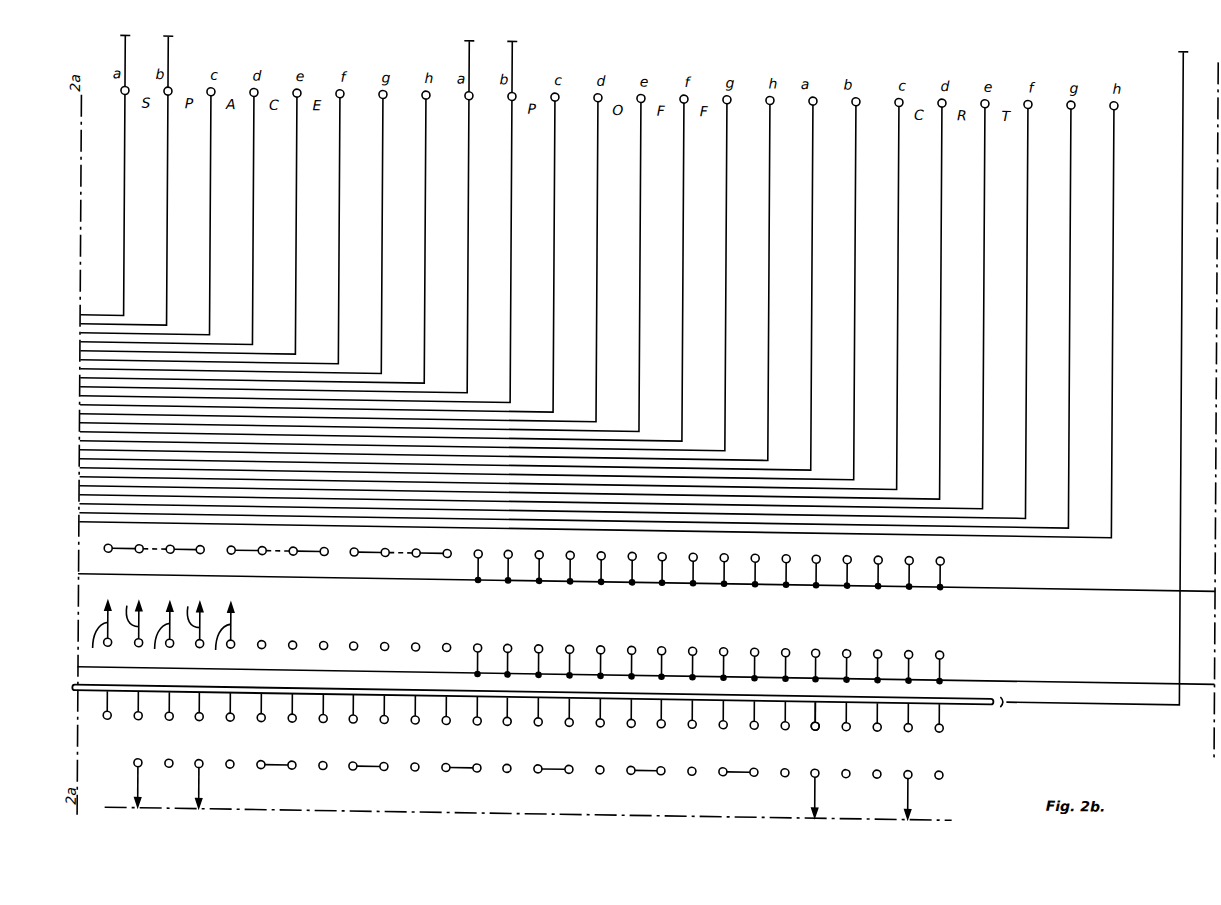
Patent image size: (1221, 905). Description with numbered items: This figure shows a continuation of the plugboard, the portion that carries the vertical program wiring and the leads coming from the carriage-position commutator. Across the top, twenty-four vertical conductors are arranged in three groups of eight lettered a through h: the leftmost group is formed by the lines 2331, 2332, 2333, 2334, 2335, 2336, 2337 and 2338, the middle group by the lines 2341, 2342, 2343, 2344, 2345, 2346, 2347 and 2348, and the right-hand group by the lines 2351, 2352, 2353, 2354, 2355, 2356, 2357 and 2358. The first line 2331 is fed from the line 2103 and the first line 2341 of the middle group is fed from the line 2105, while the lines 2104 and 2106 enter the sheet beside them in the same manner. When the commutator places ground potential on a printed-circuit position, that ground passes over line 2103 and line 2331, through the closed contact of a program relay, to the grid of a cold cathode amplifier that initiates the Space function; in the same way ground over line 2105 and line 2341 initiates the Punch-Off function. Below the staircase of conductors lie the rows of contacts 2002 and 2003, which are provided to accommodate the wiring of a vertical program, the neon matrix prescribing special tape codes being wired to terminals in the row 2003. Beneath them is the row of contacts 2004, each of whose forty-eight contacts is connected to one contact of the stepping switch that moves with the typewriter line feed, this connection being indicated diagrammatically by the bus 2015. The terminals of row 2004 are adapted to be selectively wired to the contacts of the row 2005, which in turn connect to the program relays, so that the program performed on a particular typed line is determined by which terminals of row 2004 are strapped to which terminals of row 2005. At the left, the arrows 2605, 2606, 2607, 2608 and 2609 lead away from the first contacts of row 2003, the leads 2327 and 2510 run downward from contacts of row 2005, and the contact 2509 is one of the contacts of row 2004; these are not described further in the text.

The line 2103 is at (125, 50).
The input conductor b 2104 is at (168, 50).
The line 2105 is at (469, 50).
The input conductor b of second group 2106 is at (512, 50).
The bus 2015 is at (1183, 48).
The line 2331 is at (125, 120).
The contact 2332 is at (168, 139).
The contact 2333 is at (211, 135).
The contact 2334 is at (254, 148).
The contact 2335 is at (297, 156).
The contact 2336 is at (340, 167).
The contact 2337 is at (383, 177).
The contact 2338 is at (426, 187).
The line 2341 is at (469, 131).
The contact 2342 is at (512, 137).
The contact 2343 is at (555, 149).
The contact 2344 is at (598, 161).
The contact 2345 is at (641, 170).
The contact 2346 is at (684, 181).
The contact 2347 is at (727, 192).
The contact 2348 is at (770, 206).
The contact 2351 is at (813, 125).
The contact 2352 is at (856, 135).
The contact 2353 is at (899, 144).
The contact 2354 is at (942, 152).
The contact 2355 is at (985, 163).
The contact 2356 is at (1028, 174).
The contact 2357 is at (1071, 186).
The contact 2358 is at (1114, 200).
The row of contacts 2002 is at (1012, 567).
The row of contacts 2003 is at (1012, 648).
The row of contacts 2004 is at (1063, 720).
The row of contacts 2005 is at (571, 783).
The output lead 2605 is at (99, 633).
The output lead 2606 is at (133, 610).
The output lead 2607 is at (160, 634).
The output lead 2608 is at (196, 611).
The output lead 2609 is at (222, 635).
The lead 2327 is at (142, 777).
The lead 2510 is at (203, 785).
The contact 2509 is at (819, 719).